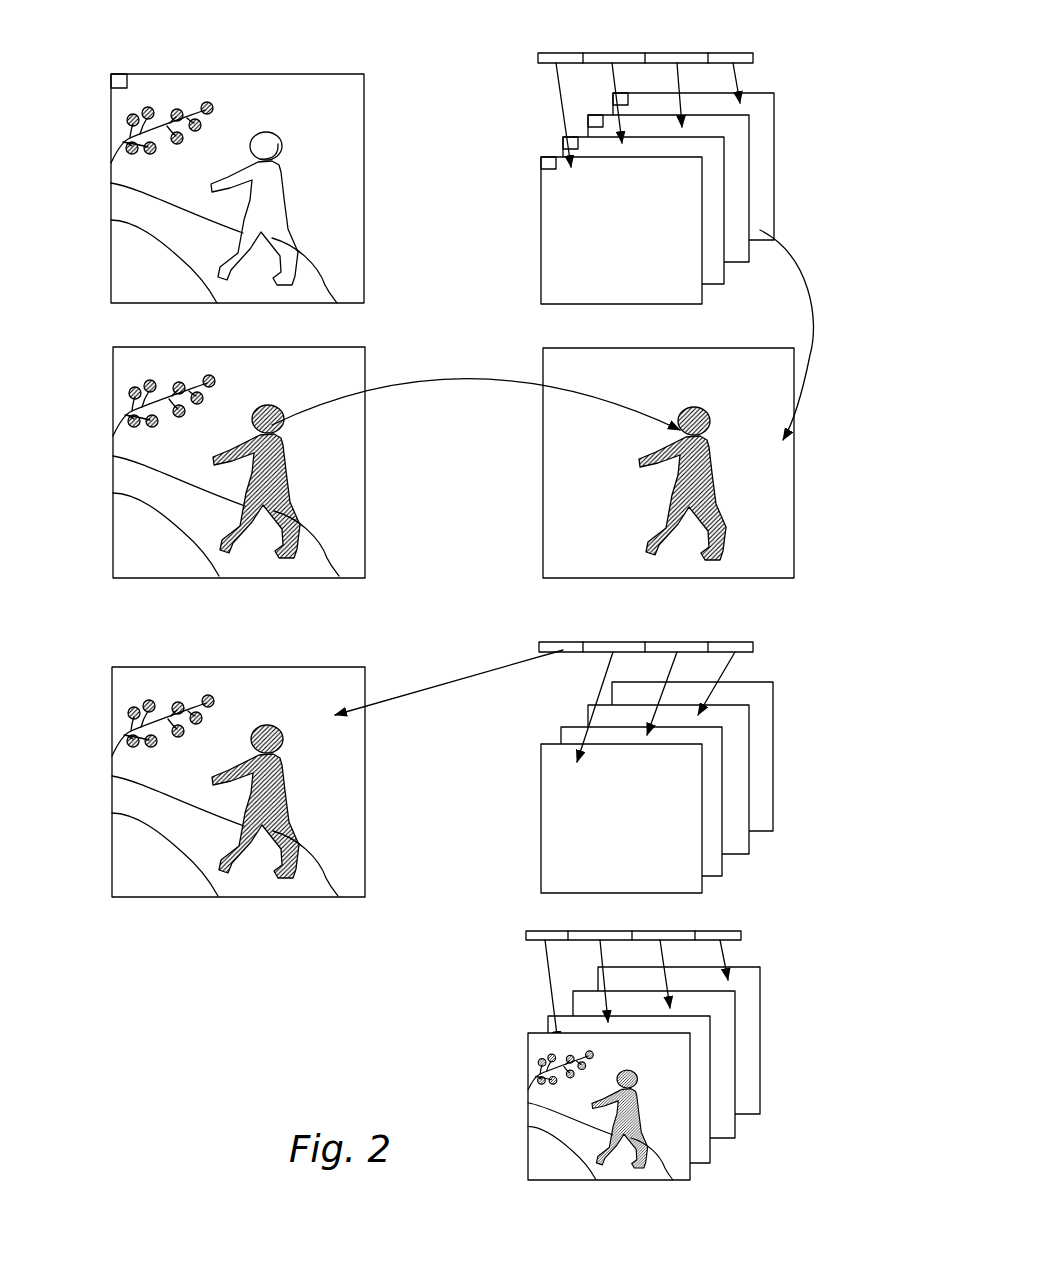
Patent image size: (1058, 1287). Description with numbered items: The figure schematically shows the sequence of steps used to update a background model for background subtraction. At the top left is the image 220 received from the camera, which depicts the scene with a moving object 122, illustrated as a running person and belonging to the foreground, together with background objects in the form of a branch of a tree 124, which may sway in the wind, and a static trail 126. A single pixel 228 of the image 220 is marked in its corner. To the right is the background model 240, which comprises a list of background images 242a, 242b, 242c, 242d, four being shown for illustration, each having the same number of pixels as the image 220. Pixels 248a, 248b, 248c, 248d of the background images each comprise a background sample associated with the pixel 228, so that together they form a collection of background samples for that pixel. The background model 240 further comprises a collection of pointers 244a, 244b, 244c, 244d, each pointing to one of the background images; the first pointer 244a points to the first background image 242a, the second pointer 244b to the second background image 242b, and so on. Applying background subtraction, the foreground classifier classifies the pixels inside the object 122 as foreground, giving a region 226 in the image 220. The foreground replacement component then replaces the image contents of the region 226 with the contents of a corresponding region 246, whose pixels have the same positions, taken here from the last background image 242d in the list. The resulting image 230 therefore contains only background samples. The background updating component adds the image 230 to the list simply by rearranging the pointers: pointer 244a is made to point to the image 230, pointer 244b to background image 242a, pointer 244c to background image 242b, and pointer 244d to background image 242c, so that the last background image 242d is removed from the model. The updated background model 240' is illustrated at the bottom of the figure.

The image 220 is at (193, 73).
The pixel 228 is at (111, 80).
The branch of a tree 124 is at (111, 132).
The moving object 122 is at (267, 185).
The trail 126 is at (130, 210).
The background model 240 is at (704, 51).
The pointer 244a is at (562, 58).
The pointer 244b is at (618, 59).
The pointer 244c is at (683, 58).
The pointer 244d is at (735, 60).
The pixel of background image 248a is at (541, 166).
The pixel of background image 248b is at (563, 142).
The pixel of background image 248c is at (588, 121).
The pixel of background image 248d is at (613, 98).
The background image 242a is at (682, 285).
The background image 242b is at (715, 228).
The background image 242c is at (733, 185).
The background image 242d is at (757, 137).
The region 226 is at (268, 405).
The corresponding region 246 is at (695, 405).
The resulting image 230 is at (265, 667).
The updated background model 240' is at (696, 959).